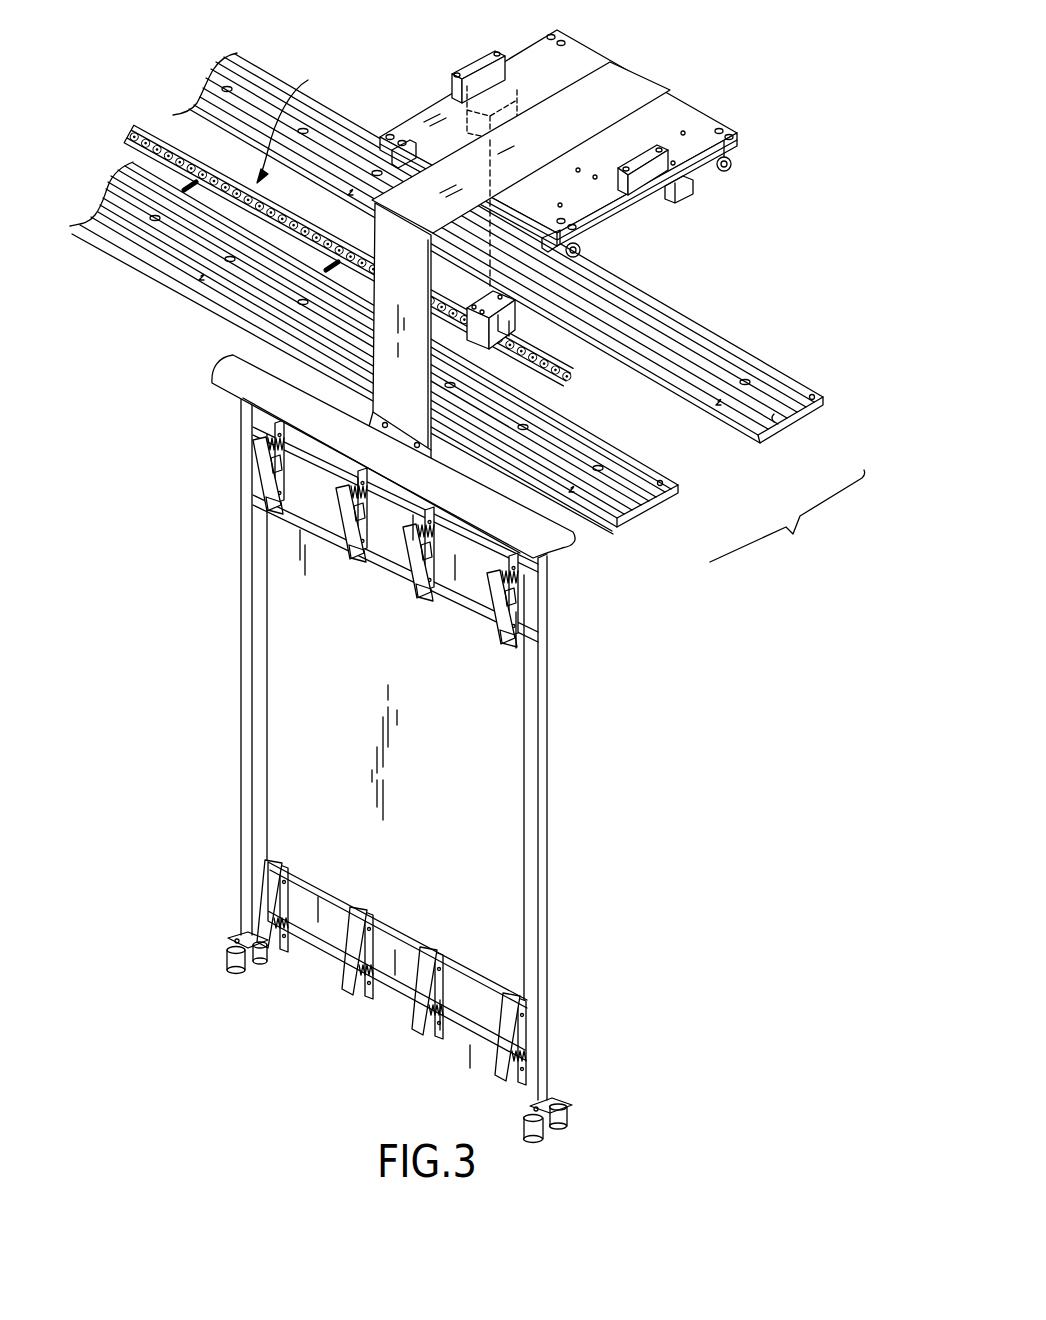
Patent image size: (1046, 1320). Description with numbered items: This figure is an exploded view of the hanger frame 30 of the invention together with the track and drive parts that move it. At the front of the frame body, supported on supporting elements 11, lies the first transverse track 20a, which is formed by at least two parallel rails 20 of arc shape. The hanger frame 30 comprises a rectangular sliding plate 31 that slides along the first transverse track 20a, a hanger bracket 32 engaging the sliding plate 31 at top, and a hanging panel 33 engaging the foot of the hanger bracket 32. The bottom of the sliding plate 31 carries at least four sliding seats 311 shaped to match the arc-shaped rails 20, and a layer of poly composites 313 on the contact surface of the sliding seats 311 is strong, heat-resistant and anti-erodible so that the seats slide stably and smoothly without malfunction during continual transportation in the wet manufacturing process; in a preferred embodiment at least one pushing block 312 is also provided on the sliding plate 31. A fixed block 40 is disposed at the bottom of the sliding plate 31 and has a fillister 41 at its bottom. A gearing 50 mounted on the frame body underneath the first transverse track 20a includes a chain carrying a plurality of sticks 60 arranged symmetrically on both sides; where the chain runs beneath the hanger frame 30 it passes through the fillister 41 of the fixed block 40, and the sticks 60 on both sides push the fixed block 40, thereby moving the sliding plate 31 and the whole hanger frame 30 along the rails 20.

The supporting element 11 is at (627, 520).
The rail 20 is at (673, 491).
The first transverse track 20a is at (787, 517).
The hanger frame 30 is at (121, 297).
The sliding plate 31 is at (423, 143).
The sliding seat 311 is at (732, 163).
The pushing block 312 is at (648, 172).
The layer of poly composites 313 is at (711, 172).
The hanger bracket 32 is at (393, 373).
The hanging panel 33 is at (250, 897).
The fixed block 40 is at (505, 300).
The fillister 41 is at (505, 322).
The gearing 50 is at (294, 120).
The stick 60 is at (238, 168).